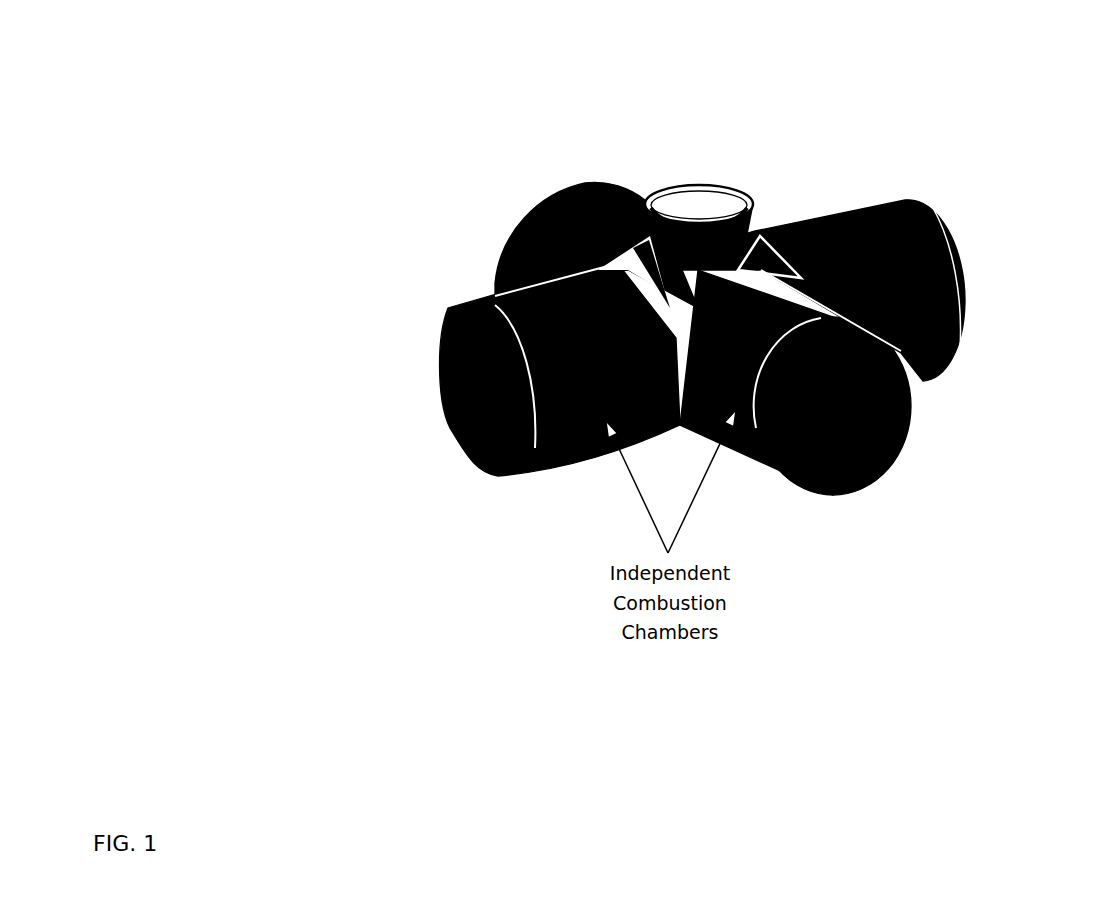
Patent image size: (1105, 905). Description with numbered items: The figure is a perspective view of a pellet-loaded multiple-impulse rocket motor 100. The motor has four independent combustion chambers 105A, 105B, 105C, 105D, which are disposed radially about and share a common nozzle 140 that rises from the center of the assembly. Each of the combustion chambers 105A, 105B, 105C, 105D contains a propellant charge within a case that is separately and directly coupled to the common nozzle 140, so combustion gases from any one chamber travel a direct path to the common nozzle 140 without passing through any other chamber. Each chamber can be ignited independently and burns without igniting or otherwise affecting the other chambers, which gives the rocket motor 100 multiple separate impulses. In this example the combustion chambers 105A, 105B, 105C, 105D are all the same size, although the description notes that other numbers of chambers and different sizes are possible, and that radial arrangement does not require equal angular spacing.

The pellet-loaded multiple-impulse rocket motor 100 is at (436, 49).
The independent combustion chamber 105A is at (925, 206).
The independent combustion chamber 105B is at (478, 468).
The independent combustion chamber 105C is at (857, 483).
The independent combustion chamber 105D is at (510, 206).
The common nozzle 140 is at (715, 178).